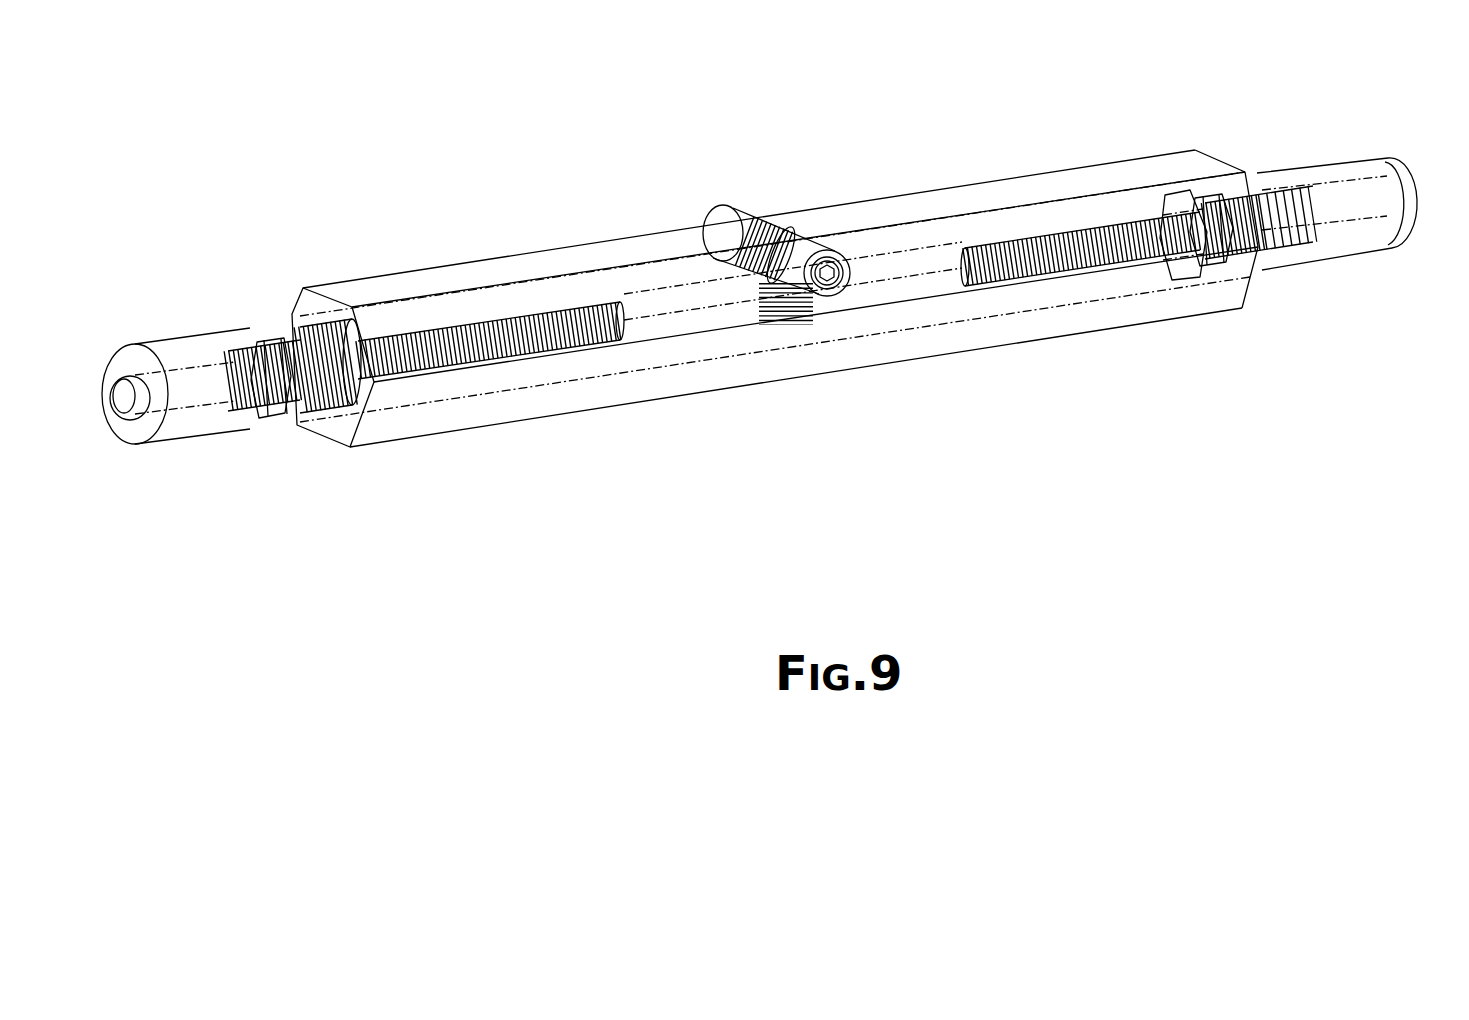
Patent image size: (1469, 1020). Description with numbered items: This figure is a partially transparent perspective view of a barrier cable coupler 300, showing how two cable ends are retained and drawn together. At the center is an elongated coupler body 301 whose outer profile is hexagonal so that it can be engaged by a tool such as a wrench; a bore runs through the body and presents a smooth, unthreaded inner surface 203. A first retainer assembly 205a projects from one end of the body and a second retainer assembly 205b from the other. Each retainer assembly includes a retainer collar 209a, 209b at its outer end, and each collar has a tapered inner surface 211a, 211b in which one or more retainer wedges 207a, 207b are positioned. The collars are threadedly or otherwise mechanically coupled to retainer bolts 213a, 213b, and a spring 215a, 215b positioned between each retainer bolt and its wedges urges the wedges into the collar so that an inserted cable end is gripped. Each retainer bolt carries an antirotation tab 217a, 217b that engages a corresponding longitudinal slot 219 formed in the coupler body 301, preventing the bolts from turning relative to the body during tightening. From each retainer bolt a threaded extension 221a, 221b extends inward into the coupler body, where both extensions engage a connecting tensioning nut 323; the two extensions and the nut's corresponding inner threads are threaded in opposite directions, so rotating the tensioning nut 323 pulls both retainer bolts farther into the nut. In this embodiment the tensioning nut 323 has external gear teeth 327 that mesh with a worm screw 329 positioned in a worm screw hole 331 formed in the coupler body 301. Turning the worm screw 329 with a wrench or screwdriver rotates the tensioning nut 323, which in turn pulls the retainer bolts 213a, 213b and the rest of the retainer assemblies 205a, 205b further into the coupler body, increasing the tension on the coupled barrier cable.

The barrier cable coupler 300 is at (454, 142).
The inner surface 203 is at (587, 278).
The coupler body 301 is at (452, 272).
The tensioning nut 323 is at (908, 250).
The retainer bolt 213a is at (357, 440).
The retainer bolt 213b is at (1135, 283).
The tab 217a is at (375, 386).
The tab 217b is at (1228, 300).
The longitudinal slot 219 is at (693, 312).
The threaded extension 221a is at (556, 360).
The threaded extension 221b is at (1008, 278).
The first retainer assembly 205a is at (199, 296).
The second retainer assembly 205b is at (1345, 290).
The retainer collar 209a is at (178, 332).
The retainer collar 209b is at (1360, 262).
The tapered inner surface 211a is at (184, 418).
The tapered inner surface 211b is at (1363, 186).
The retainer wedge 207a is at (192, 416).
The retainer wedge 207b is at (1313, 187).
The spring 215a is at (251, 338).
The spring 215b is at (1260, 193).
The worm screw 329 is at (748, 208).
The worm screw hole 331 is at (805, 248).
The external gear teeth 327 is at (800, 322).